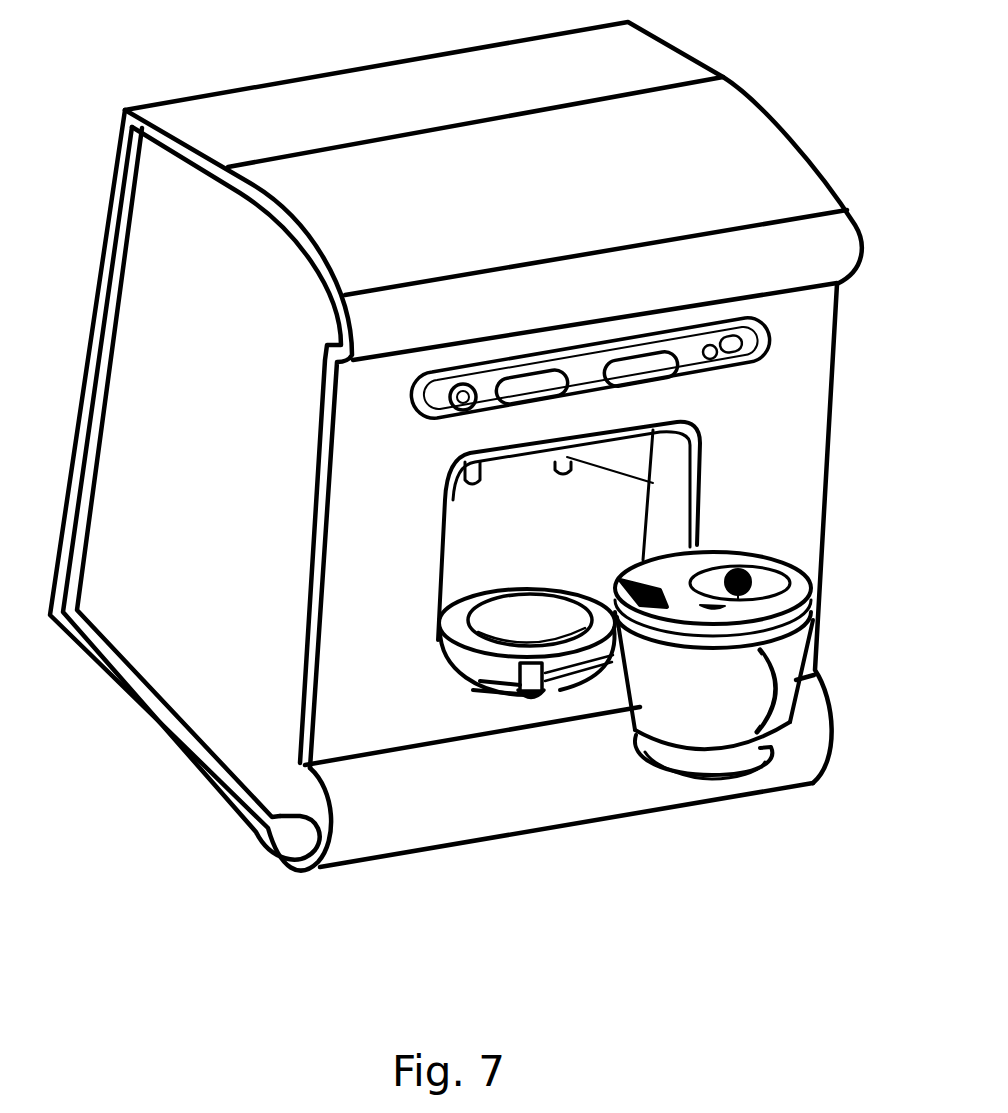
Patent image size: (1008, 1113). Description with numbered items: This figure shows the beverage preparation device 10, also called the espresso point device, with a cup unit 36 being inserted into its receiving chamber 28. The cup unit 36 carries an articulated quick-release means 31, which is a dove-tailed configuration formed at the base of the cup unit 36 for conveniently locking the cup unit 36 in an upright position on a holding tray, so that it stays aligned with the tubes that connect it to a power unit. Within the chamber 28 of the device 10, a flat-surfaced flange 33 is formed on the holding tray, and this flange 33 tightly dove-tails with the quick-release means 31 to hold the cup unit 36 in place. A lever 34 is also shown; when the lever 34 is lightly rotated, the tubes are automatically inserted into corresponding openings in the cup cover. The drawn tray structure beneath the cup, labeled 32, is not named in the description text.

The beverage preparation device 10 is at (268, 64).
The receiving chamber 28 is at (485, 555).
The articulated quick-release means 31 is at (660, 772).
The cup holder 32 is at (455, 700).
The flat-surfaced flange 33 is at (527, 610).
The lever 34 is at (535, 700).
The cup unit 36 is at (820, 673).